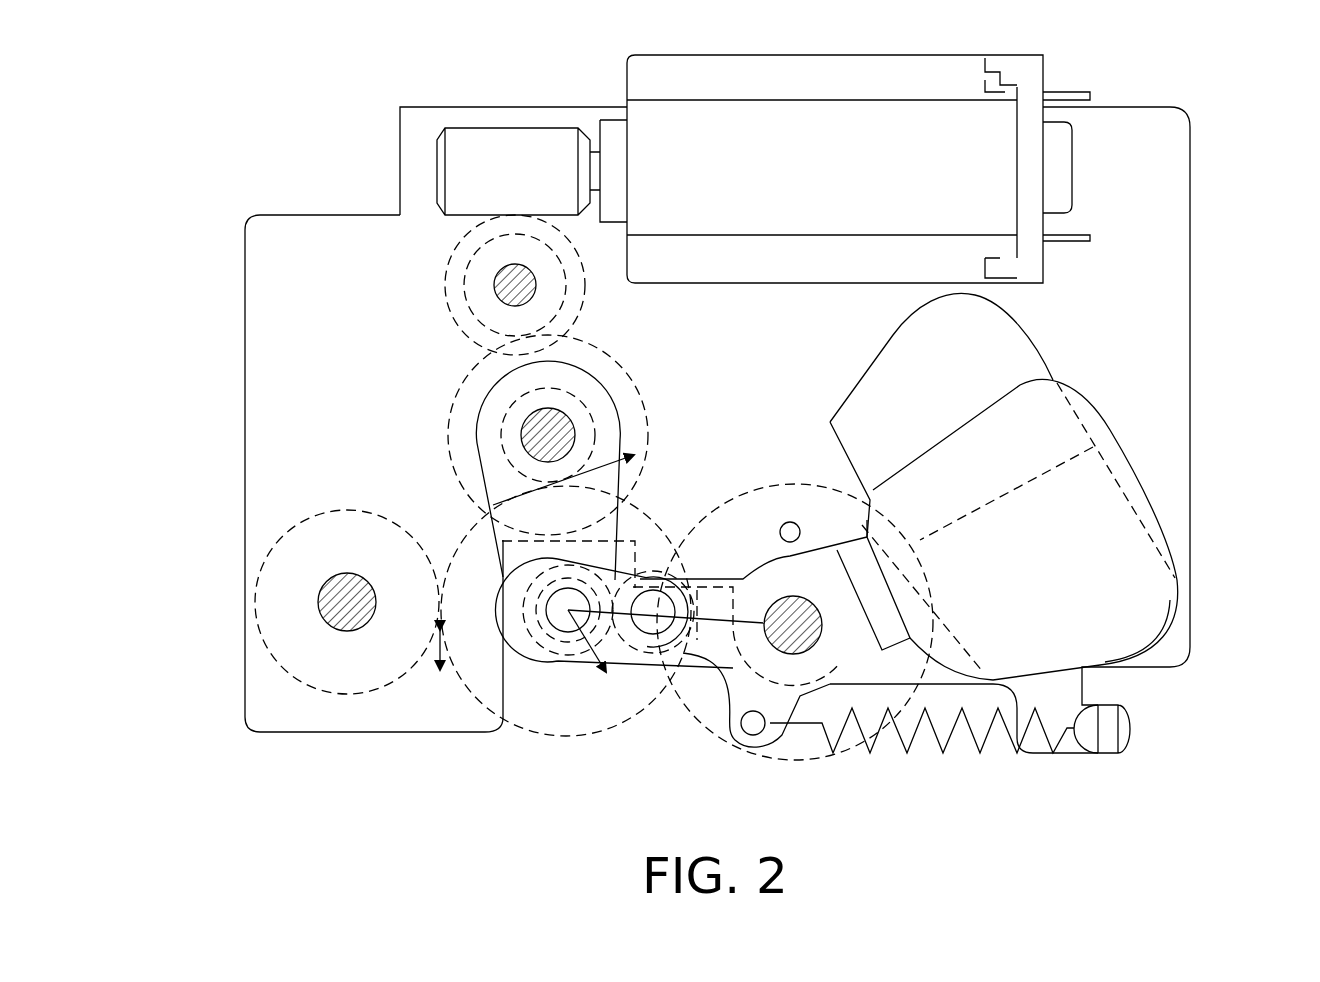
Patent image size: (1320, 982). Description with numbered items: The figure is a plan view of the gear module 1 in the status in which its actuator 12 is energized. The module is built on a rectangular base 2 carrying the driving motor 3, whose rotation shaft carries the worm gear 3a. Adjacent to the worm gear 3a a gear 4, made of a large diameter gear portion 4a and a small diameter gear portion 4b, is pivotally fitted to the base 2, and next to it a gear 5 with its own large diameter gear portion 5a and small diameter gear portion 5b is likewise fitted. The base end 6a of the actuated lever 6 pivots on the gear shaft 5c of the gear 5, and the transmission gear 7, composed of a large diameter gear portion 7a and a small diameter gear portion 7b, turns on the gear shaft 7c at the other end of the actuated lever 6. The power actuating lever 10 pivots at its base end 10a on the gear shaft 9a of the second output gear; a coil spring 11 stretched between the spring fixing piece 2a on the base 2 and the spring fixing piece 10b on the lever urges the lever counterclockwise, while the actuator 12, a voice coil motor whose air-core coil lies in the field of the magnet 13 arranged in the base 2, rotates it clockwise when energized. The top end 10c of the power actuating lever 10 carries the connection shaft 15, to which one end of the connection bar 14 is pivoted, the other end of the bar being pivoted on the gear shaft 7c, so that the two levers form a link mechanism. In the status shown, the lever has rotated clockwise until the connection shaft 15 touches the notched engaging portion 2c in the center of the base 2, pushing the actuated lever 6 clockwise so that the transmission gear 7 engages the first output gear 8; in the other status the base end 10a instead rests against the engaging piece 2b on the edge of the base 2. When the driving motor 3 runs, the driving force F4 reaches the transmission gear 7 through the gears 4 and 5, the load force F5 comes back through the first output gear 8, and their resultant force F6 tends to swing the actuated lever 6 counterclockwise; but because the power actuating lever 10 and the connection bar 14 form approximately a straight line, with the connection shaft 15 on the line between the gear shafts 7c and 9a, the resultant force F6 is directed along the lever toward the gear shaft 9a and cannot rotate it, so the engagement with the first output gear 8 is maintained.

The gear module 1 is at (1232, 180).
The base 2 is at (1180, 282).
The spring fixing piece 2a is at (1120, 729).
The engaging piece 2b is at (790, 522).
The notched engaging portion 2c is at (705, 514).
The driving motor 3 is at (890, 55).
The worm gear 3a is at (520, 140).
The gear 4 is at (452, 285).
The large diameter gear portion 4a is at (452, 248).
The small diameter gear portion 4b is at (465, 285).
The gear 5 is at (583, 435).
The large diameter gear portion 5a is at (632, 378).
The small diameter gear portion 5b is at (596, 410).
The gear shaft 5c is at (528, 434).
The actuated lever 6 is at (580, 509).
The base end 6a is at (495, 400).
The transmission gear 7 is at (566, 668).
The large diameter gear portion 7a is at (520, 725).
The small diameter gear portion 7b is at (553, 655).
The gear shaft 7c is at (552, 605).
The first output gear 8 is at (258, 632).
The gear shaft 9a is at (813, 640).
The power actuating lever 10 is at (769, 647).
The base end 10a is at (803, 560).
The spring fixing piece 10b is at (747, 733).
The top end 10c is at (663, 679).
The coil spring 11 is at (987, 742).
The actuator 12 is at (1077, 382).
The magnet 13 is at (1170, 538).
The connection bar 14 is at (522, 640).
The connection shaft 15 is at (670, 648).
The driving force F4 is at (595, 475).
The force of the load F5 is at (419, 680).
The resultant force F6 is at (594, 670).